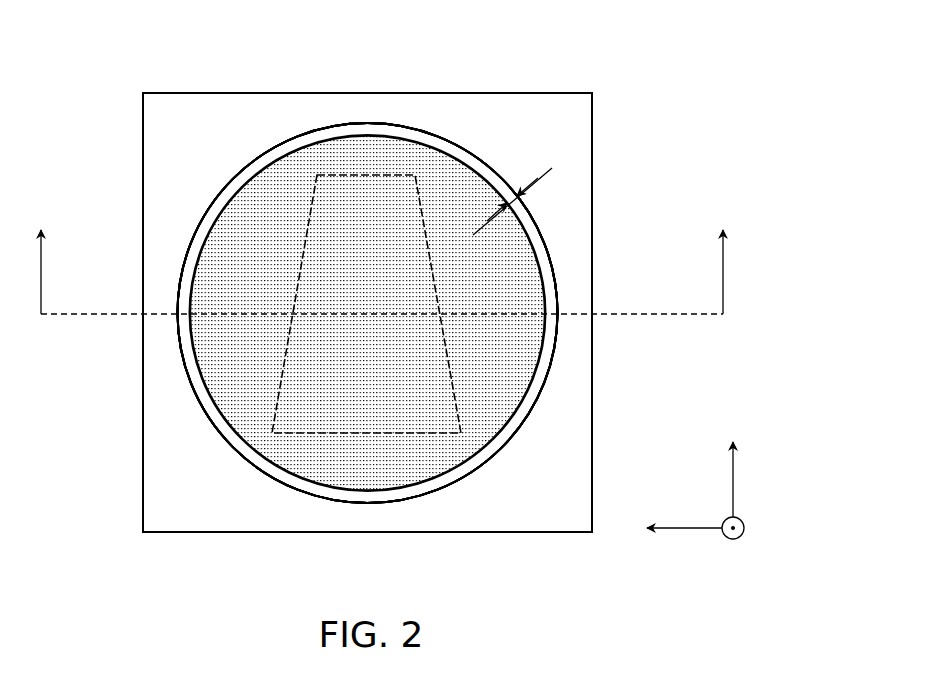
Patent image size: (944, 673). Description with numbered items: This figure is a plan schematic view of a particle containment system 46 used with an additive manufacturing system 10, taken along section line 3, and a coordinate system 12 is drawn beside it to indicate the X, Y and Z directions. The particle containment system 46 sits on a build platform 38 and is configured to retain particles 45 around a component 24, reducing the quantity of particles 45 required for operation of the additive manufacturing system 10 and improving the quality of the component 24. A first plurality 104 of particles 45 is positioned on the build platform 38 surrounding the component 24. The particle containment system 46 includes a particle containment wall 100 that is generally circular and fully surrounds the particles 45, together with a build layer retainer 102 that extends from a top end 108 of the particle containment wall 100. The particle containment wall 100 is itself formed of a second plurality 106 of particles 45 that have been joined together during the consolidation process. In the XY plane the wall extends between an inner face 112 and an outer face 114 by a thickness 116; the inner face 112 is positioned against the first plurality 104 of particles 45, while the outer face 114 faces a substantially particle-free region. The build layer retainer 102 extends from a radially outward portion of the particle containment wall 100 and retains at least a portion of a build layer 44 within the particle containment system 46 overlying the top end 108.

The section line 3 is at (382, 256).
The additive manufacturing system 10 is at (529, 56).
The coordinate system 12 is at (732, 392).
The component 24 is at (387, 415).
The build platform 38 is at (575, 207).
The build layer 44 is at (197, 400).
The particles 45 is at (253, 225).
The particle containment system 46 is at (605, 273).
The particle containment wall 100 is at (182, 273).
The build layer retainer 102 is at (222, 443).
The first plurality of particles 104 is at (302, 147).
The second plurality of particles 106 is at (273, 485).
The top end 108 is at (325, 137).
The inner face 112 is at (378, 138).
The outer face 114 is at (427, 130).
The thickness 116 is at (552, 168).